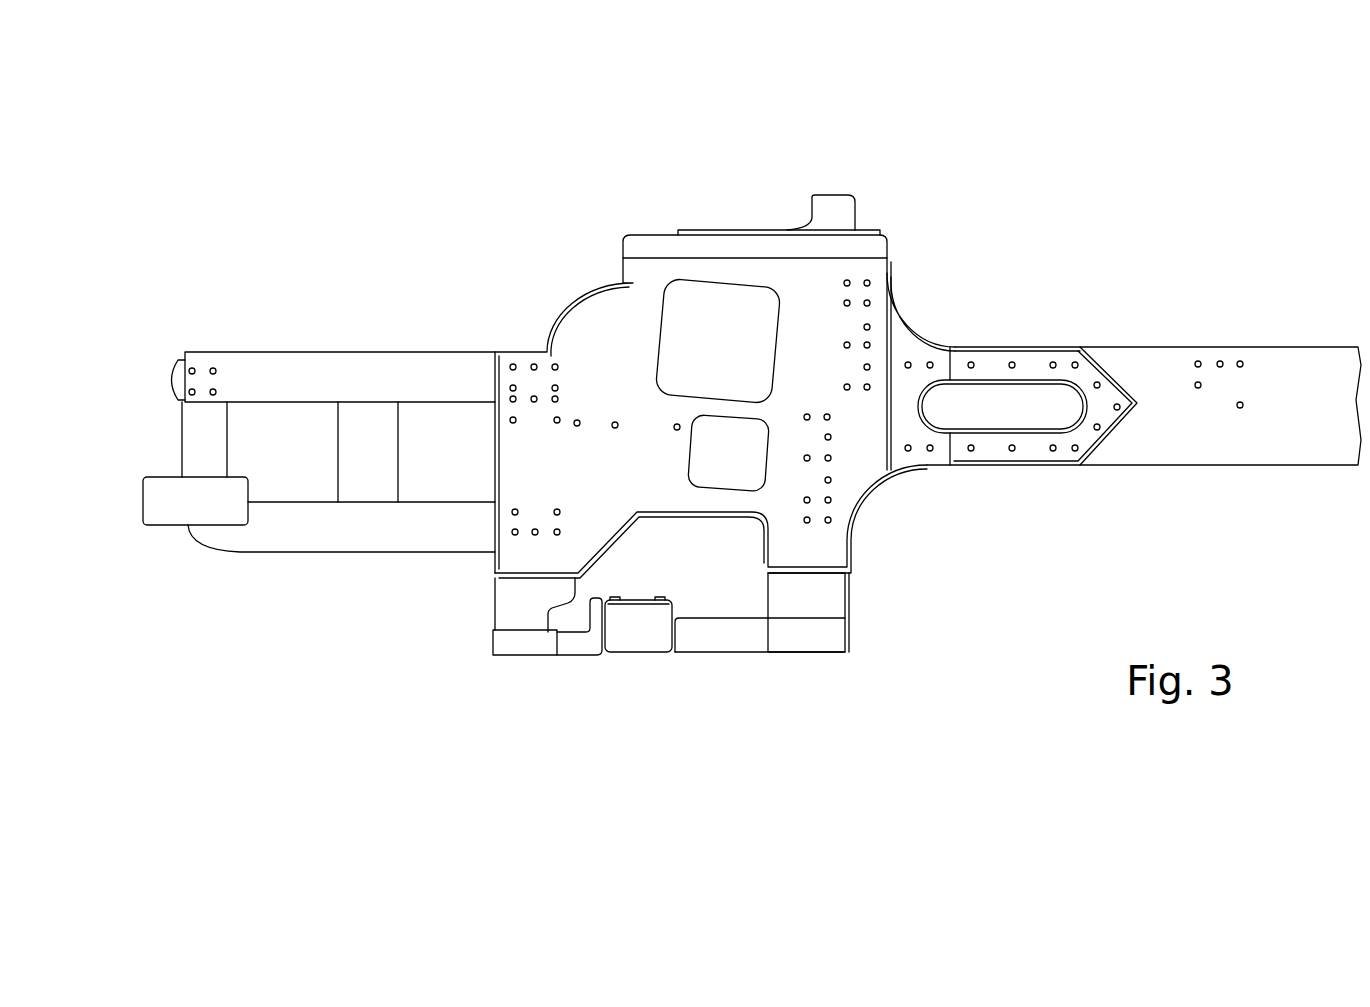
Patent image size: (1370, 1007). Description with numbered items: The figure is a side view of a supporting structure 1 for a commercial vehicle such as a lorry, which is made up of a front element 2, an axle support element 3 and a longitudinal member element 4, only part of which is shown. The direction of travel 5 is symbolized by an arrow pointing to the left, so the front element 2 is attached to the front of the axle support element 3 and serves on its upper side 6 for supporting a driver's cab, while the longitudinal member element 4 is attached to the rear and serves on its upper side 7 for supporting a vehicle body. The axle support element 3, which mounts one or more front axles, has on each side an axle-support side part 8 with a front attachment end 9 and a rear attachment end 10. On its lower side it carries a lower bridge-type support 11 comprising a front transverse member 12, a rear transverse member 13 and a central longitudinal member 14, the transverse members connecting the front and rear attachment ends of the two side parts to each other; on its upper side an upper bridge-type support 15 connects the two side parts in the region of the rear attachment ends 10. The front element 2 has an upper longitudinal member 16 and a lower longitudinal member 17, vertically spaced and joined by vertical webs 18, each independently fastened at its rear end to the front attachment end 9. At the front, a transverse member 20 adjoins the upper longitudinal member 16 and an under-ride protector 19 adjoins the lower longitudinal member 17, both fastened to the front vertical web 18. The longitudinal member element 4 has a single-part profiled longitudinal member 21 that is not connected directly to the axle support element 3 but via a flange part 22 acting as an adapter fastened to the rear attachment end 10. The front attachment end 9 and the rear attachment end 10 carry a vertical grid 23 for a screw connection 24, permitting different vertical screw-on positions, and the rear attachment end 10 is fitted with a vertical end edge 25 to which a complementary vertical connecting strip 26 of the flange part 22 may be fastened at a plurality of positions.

The supporting structure 1 is at (440, 182).
The front element 2 is at (338, 600).
The axle support element 3 is at (598, 690).
The longitudinal member element 4 is at (1260, 485).
The direction of travel 5 is at (158, 285).
The upper side 6 is at (339, 346).
The upper side 7 is at (1181, 342).
The axle-support side part 8 is at (610, 337).
The front attachment end 9 is at (530, 560).
The rear attachment end 10 is at (860, 472).
The lower bridge-type support 11 is at (817, 668).
The front transverse member 12 is at (527, 625).
The rear transverse member 13 is at (828, 604).
The central longitudinal member 14 is at (648, 635).
The upper bridge-type support 15 is at (868, 203).
The upper longitudinal member 16 is at (283, 362).
The lower longitudinal member 17 is at (290, 528).
The vertical web 18 is at (357, 458).
The under-ride protector 19 is at (168, 510).
The transverse member 20 is at (165, 380).
The profiled longitudinal member 21 is at (1185, 453).
The flange part 22 is at (1030, 360).
The vertical grid 23 is at (568, 388).
The screw connection 24 is at (510, 399).
The vertical end edge 25 is at (887, 245).
The vertical connecting strip 26 is at (893, 348).